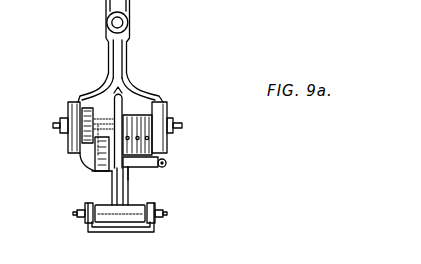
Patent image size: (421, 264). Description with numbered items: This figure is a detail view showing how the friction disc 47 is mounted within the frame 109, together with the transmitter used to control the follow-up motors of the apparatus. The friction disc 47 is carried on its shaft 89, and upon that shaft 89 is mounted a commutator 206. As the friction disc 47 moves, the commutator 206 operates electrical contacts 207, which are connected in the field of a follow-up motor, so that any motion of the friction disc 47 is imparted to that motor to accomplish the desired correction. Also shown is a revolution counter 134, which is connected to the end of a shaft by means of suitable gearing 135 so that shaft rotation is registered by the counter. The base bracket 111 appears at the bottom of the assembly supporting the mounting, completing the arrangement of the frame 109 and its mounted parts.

The frame 109 is at (108, 50).
The gearing 135 is at (103, 115).
The friction disc 47 is at (122, 108).
The commutator 206 is at (140, 120).
The shaft 89 is at (182, 127).
The electrical contacts 207 is at (166, 160).
The revolution counter 134 is at (95, 162).
The bottom bracket 111 is at (88, 226).